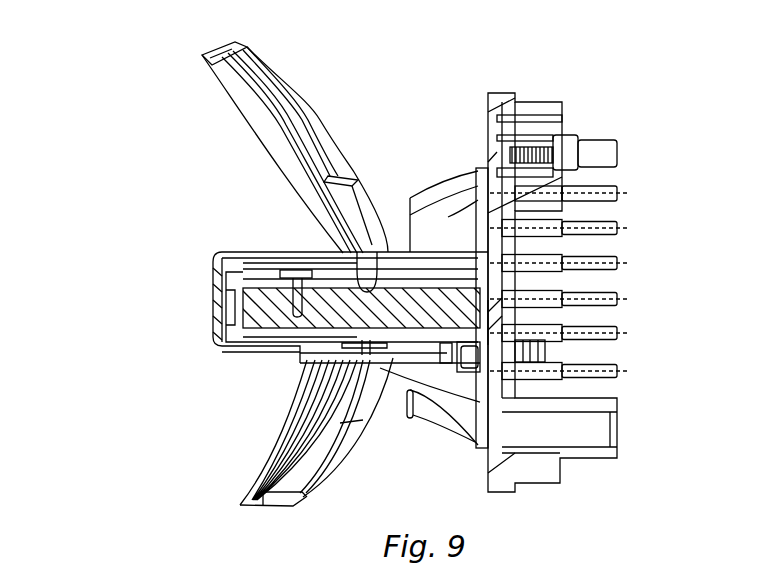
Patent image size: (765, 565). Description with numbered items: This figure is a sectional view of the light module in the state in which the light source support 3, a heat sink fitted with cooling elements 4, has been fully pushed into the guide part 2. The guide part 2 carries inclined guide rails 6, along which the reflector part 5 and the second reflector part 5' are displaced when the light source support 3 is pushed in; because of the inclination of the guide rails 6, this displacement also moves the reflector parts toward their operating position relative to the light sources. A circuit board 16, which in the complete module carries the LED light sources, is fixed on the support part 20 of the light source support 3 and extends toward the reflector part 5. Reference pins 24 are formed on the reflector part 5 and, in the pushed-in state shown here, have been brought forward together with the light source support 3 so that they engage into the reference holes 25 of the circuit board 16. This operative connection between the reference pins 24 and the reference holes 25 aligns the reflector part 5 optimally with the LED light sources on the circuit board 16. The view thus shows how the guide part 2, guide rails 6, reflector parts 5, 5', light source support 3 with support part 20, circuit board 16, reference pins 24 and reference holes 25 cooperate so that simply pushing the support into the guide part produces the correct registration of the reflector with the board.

The guide part 2 is at (508, 93).
The light source support 3 is at (493, 318).
The cooling elements 4 is at (617, 255).
The reflector part 5 is at (207, 132).
The reflector part 5' is at (272, 458).
The guide rails 6 is at (448, 215).
The circuit board 16 is at (418, 275).
The support part 20 is at (258, 311).
The reference pins 24 is at (338, 265).
The reference holes 25 is at (407, 232).